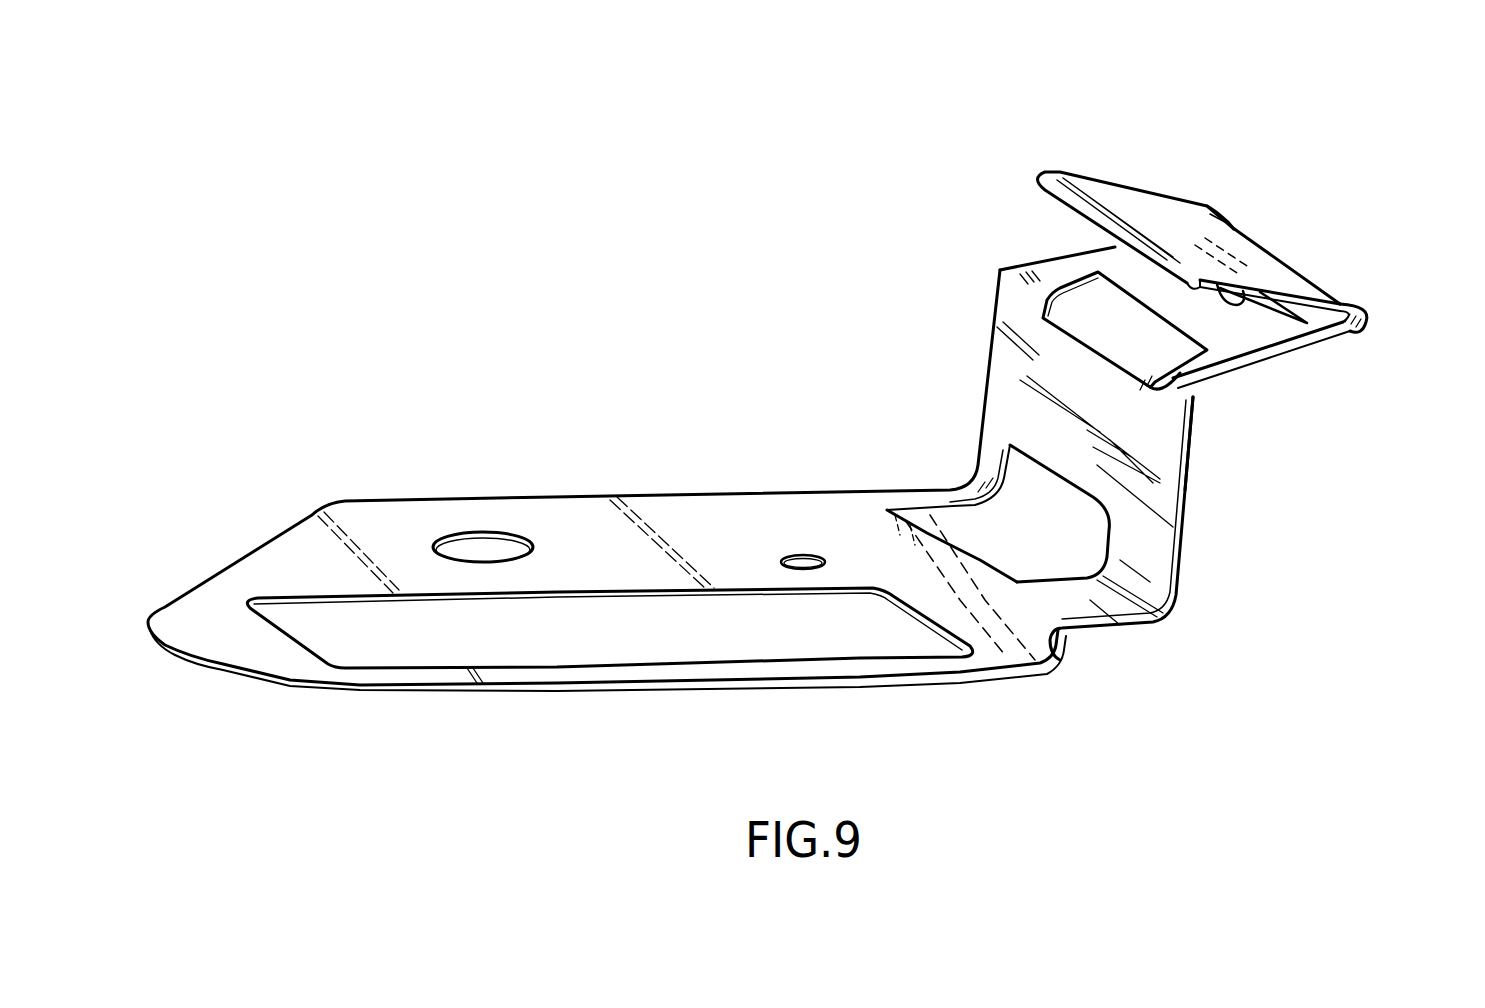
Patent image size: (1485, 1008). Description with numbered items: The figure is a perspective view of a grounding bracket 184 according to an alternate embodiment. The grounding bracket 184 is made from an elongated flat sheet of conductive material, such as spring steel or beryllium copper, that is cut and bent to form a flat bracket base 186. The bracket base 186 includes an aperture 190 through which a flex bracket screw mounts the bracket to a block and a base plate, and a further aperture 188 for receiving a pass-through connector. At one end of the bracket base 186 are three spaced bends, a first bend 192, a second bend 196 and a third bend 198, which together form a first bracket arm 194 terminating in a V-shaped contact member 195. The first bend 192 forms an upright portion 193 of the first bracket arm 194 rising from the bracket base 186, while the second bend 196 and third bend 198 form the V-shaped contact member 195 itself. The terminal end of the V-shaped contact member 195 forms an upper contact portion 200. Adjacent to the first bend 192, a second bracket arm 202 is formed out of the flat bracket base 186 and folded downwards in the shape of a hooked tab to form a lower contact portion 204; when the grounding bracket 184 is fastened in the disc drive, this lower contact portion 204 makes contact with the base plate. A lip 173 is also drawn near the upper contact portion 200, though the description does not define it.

The grounding bracket 184 is at (262, 494).
The bracket base 186 is at (690, 520).
The aperture 188 is at (397, 652).
The aperture 190 is at (470, 545).
The first bend 192 is at (1160, 620).
The upright portion 193 is at (1177, 447).
The first bracket arm 194 is at (982, 262).
The V-shaped contact member 195 is at (1392, 304).
The second bend 196 is at (1220, 386).
The third bend 198 is at (1368, 327).
The upper contact portion 200 is at (1068, 172).
The detent lip 173 is at (1252, 303).
The second bracket arm 202 is at (940, 567).
The lower contact portion 204 is at (1007, 660).